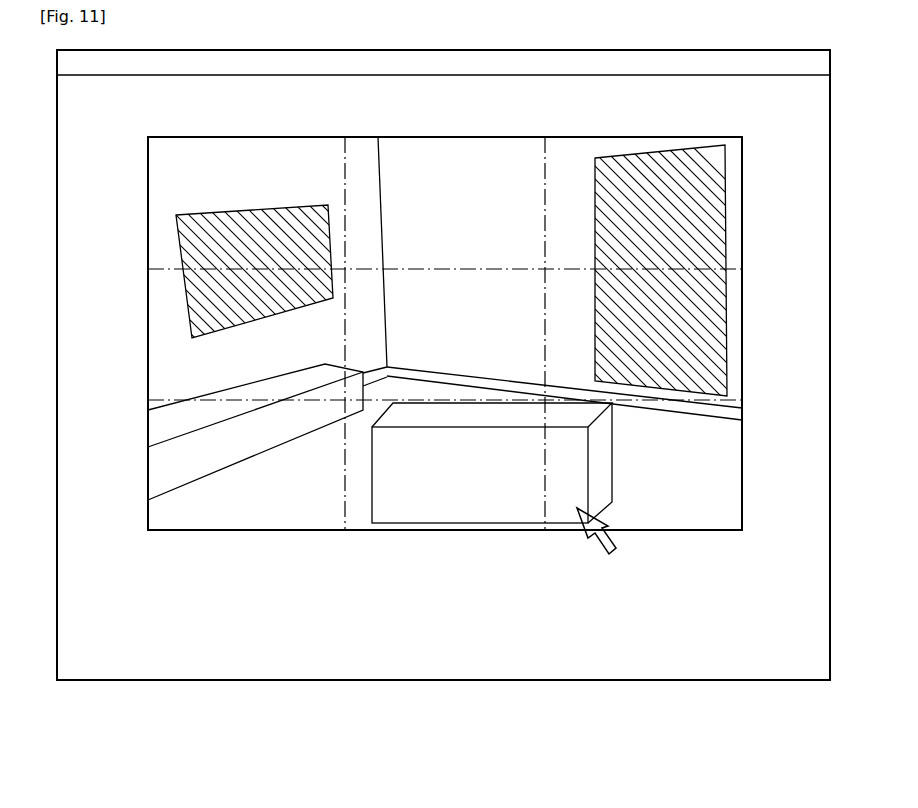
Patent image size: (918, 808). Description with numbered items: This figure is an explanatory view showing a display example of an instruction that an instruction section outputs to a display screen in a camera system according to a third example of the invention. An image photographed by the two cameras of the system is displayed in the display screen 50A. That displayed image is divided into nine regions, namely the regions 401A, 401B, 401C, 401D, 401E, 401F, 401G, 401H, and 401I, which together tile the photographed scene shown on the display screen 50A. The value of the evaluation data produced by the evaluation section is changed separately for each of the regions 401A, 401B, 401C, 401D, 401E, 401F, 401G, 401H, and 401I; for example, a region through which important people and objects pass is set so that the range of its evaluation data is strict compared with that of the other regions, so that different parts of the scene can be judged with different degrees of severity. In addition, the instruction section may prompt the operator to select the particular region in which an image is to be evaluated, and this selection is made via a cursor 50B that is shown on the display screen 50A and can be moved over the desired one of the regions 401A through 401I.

The display screen 50A is at (190, 680).
The cursor 50B is at (597, 542).
The region 401A is at (250, 157).
The region 401B is at (168, 340).
The region 401C is at (168, 482).
The region 401D is at (415, 157).
The region 401E is at (445, 290).
The region 401F is at (420, 510).
The region 401G is at (730, 197).
The region 401H is at (731, 330).
The region 401I is at (718, 483).